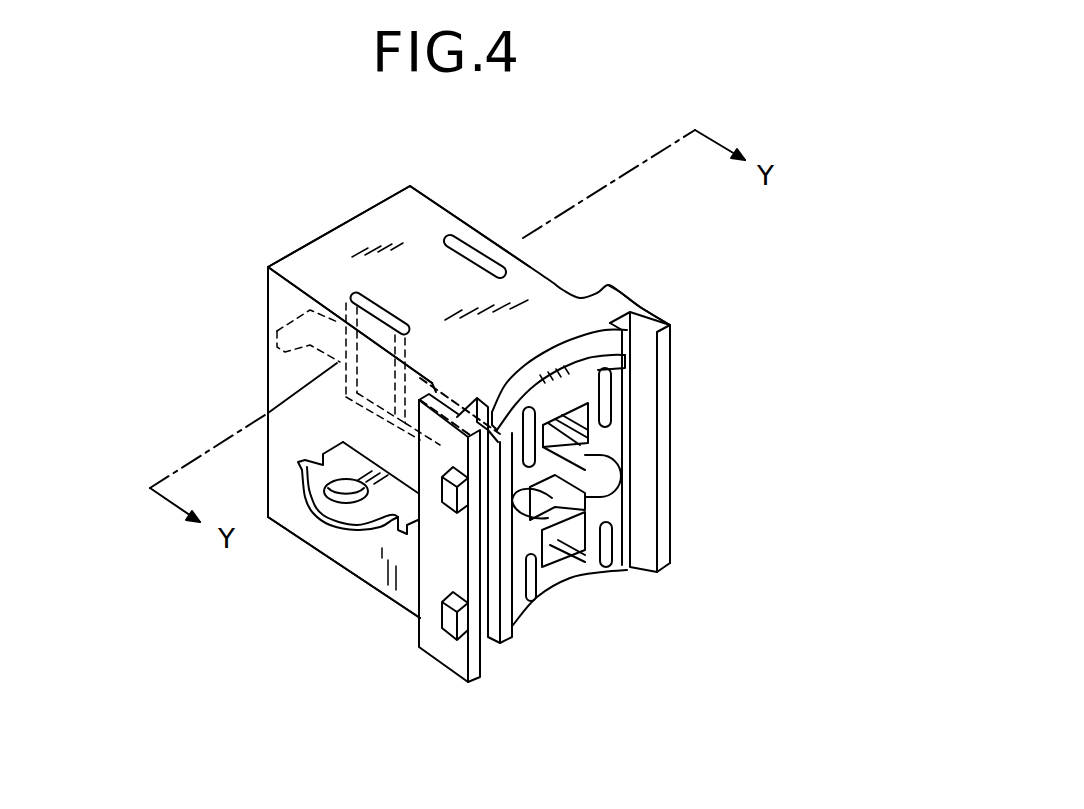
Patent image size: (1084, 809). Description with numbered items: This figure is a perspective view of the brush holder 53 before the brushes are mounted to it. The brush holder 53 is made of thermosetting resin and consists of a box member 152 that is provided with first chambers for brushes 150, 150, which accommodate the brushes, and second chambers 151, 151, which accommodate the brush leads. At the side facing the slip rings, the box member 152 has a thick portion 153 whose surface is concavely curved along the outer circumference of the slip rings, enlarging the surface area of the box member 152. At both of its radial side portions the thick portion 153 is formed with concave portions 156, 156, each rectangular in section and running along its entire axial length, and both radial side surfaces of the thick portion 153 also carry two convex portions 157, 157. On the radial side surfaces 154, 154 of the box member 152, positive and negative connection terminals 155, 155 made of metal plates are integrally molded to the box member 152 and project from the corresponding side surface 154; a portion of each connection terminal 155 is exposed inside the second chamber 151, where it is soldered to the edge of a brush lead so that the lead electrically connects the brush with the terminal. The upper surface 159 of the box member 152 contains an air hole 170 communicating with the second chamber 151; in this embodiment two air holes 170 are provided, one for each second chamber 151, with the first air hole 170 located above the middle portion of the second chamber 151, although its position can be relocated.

The brush holder 53 is at (515, 182).
The first chamber for brushes 150 is at (585, 423).
The second chamber 151 is at (607, 472).
The box member 152 is at (332, 264).
The thick portion 153 is at (620, 292).
The radial side surface 154 is at (281, 382).
The connection terminal 155 is at (328, 508).
The concave portion 156 is at (650, 352).
The convex portion 157 is at (450, 637).
The upper surface 159 is at (385, 217).
The air hole 170 is at (350, 295).